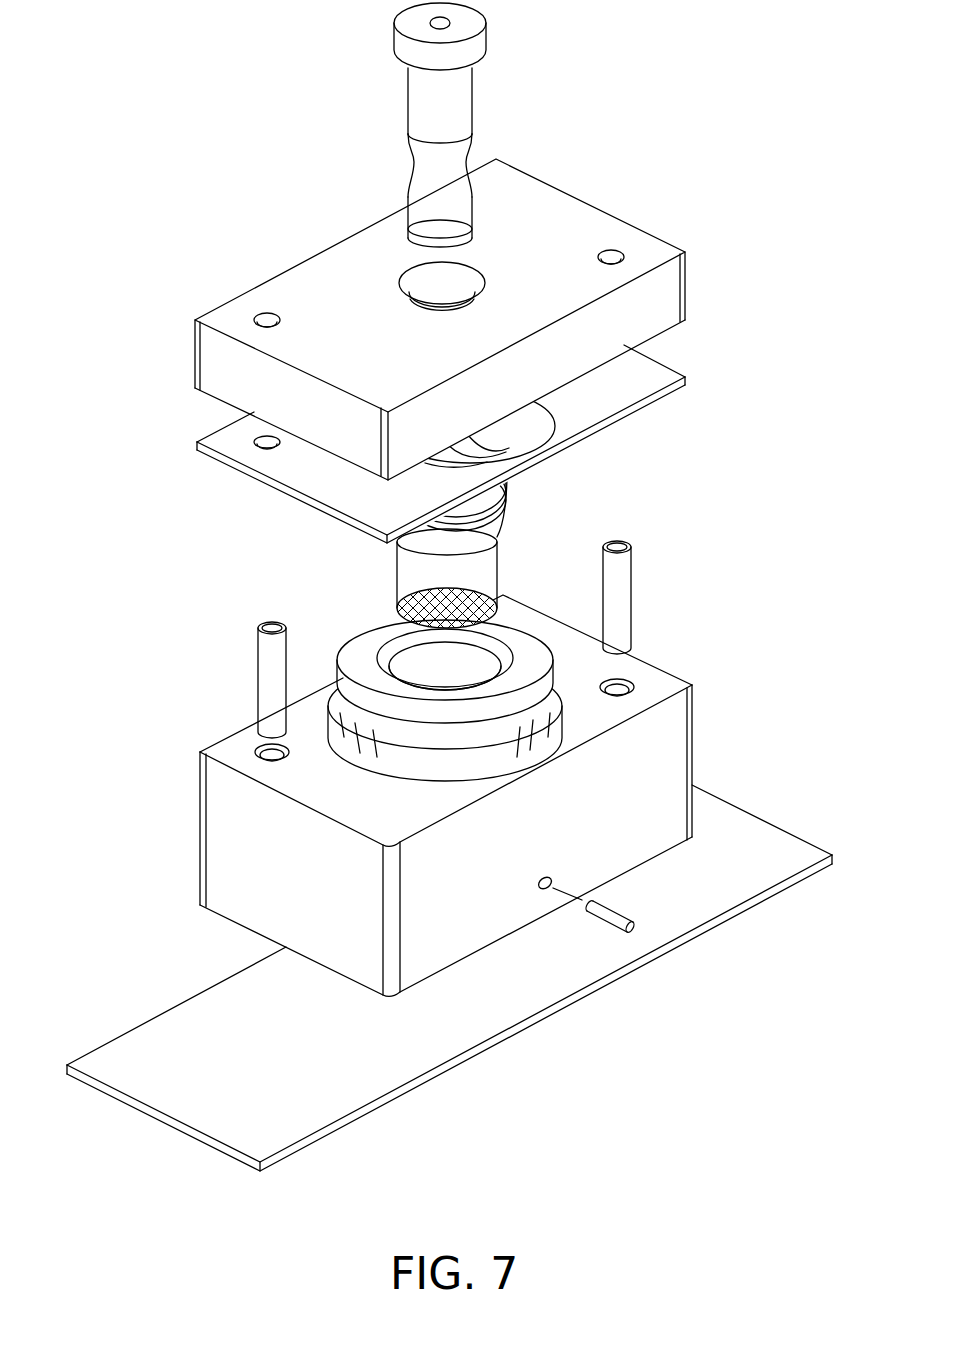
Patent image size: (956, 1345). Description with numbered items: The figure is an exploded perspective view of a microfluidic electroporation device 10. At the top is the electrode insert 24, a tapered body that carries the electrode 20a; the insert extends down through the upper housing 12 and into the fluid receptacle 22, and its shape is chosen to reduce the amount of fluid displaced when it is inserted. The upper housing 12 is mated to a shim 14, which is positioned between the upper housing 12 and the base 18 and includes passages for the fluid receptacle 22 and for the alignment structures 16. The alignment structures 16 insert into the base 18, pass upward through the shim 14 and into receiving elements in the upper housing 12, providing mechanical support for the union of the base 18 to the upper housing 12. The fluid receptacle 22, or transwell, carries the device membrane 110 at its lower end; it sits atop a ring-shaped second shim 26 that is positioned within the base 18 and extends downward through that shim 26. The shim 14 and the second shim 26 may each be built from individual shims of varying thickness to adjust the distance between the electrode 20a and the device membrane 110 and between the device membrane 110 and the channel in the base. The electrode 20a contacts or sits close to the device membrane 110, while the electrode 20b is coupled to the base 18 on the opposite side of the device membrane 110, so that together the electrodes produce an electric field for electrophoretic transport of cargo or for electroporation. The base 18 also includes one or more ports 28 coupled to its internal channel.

The microfluidic electroporation device 10 is at (117, 46).
The upper housing 12 is at (327, 278).
The shim 14 is at (658, 377).
The alignment structures 16 is at (638, 572).
The base 18 is at (297, 884).
The electrode 20a is at (458, 213).
The electrode 20b is at (547, 1028).
The fluid receptacle 22 is at (446, 528).
The electrode insert 24 is at (506, 125).
The second shim 26 is at (530, 713).
The ports 28 is at (608, 895).
The device membrane 110 is at (410, 606).